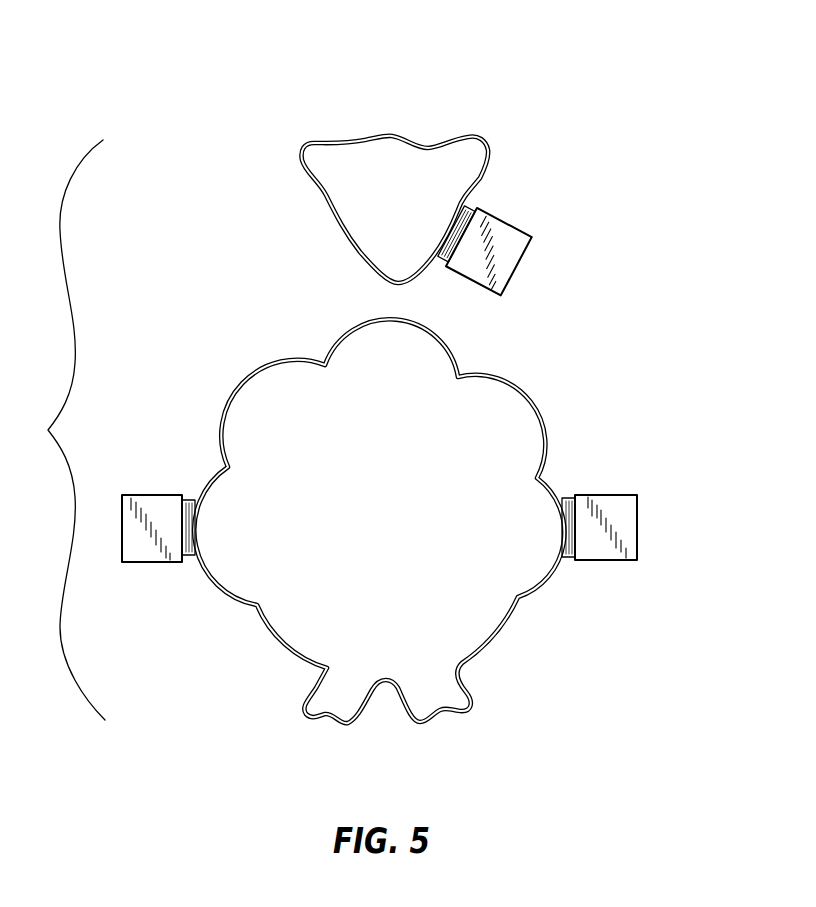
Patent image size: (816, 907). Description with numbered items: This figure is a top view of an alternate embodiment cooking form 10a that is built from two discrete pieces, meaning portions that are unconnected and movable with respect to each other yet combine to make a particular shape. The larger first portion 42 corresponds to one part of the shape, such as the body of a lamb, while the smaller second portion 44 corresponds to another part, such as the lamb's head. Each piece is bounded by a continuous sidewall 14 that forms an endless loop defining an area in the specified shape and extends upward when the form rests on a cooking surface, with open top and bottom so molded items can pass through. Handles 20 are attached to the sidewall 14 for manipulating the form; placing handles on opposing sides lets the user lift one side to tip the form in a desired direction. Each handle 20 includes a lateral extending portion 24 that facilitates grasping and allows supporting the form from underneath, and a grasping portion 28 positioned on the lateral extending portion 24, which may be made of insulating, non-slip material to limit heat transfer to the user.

The alternate embodiment form 10a is at (554, 185).
The sidewall 14 is at (406, 396).
The handle 20 is at (510, 263).
The lateral extending portion 24 is at (565, 497).
The grasping portion 28 is at (605, 555).
The first portion 42 is at (537, 400).
The second portion 44 is at (403, 138).